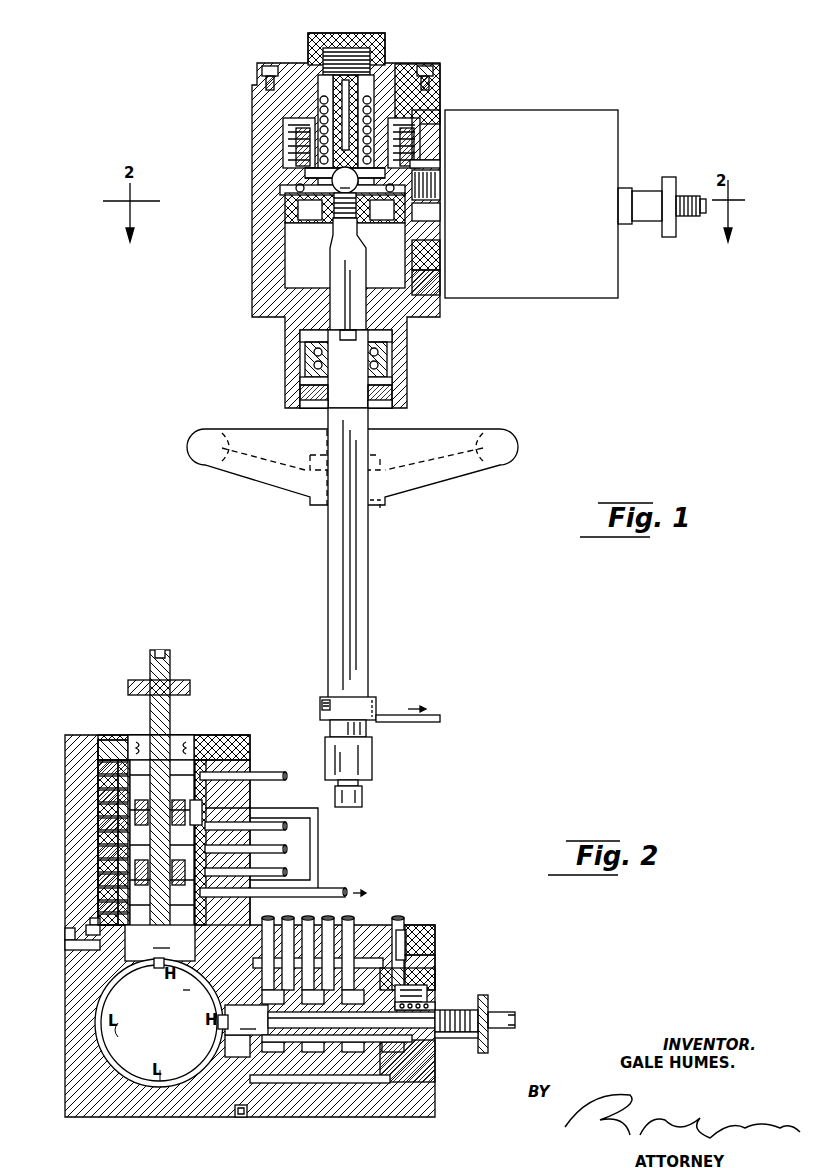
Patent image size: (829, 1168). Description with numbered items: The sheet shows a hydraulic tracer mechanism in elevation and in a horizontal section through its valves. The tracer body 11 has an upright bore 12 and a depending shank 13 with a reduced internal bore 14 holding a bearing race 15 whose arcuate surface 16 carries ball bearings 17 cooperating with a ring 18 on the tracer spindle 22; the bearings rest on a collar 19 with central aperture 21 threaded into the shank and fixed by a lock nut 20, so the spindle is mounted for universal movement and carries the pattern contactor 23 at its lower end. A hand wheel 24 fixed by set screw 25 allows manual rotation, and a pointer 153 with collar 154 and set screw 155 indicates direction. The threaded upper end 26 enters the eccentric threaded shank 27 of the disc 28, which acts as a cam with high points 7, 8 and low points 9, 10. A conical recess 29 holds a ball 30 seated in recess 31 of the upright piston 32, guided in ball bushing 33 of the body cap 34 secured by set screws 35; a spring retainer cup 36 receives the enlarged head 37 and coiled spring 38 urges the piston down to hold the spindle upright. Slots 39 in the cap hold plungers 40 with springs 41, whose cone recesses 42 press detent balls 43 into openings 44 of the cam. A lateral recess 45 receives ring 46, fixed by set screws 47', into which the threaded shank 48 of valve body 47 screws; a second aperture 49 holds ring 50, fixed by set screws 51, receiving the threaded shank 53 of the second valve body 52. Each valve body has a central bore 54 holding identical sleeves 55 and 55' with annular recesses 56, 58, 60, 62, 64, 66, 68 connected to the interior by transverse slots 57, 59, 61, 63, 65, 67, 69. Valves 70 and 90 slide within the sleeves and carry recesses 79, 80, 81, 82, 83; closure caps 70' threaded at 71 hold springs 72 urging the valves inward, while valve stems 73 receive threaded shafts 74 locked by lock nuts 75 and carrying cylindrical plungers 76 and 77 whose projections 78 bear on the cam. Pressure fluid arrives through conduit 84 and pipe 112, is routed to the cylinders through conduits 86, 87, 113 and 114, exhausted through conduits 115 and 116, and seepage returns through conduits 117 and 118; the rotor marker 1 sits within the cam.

In FIG. 1, the tracer body 11 is at (256, 195).
In FIG. 1, the upright bore 12 is at (288, 260).
In FIG. 1, the depending shank 13 is at (295, 335).
In FIG. 1, the internal bore 14 is at (305, 348).
In FIG. 1, the bearing race 15 is at (392, 352).
In FIG. 1, the arcuate surface 16 is at (392, 364).
In FIG. 1, the ball bearings 17 is at (392, 380).
In FIG. 1, the ring 18 is at (332, 355).
In FIG. 1, the collar 19 is at (300, 390).
In FIG. 1, the lock nut 20 is at (305, 405).
In FIG. 1, the central aperture 21 is at (372, 398).
In FIG. 1, the tracer spindle 22 is at (360, 572).
In FIG. 1, the template or pattern contactor 23 is at (362, 796).
In FIG. 1, the hand wheel 24 is at (518, 447).
In FIG. 1, the set screw 25 is at (380, 508).
In FIG. 1, the threaded upper end 26 is at (358, 215).
In FIG. 1, the threaded shank 27 is at (334, 222).
In FIG. 1, the disc 28 is at (292, 205).
In FIG. 2, the disc 28 is at (125, 1043).
In FIG. 1, the conical recess 29 is at (330, 205).
In FIG. 1, the ball 30 is at (345, 180).
In FIG. 1, the conical recess 31 is at (320, 170).
In FIG. 1, the upright piston 32 is at (358, 80).
In FIG. 1, the ball bushing 33 is at (318, 112).
In FIG. 1, the body cap 34 is at (400, 68).
In FIG. 1, the set screws 35 is at (435, 68).
In FIG. 1, the spring retainer cup 36 is at (308, 48).
In FIG. 1, the enlarged head 37 is at (285, 95).
In FIG. 1, the coiled spring 38 is at (335, 48).
In FIG. 1, the slots 39 is at (290, 135).
In FIG. 1, the plungers 40 is at (290, 160).
In FIG. 1, the coiled springs 41 is at (440, 140).
In FIG. 1, the cone shaped recess 42 is at (440, 166).
In FIG. 1, the detent balls 43 is at (282, 190).
In FIG. 1, the cone shaped openings 44 is at (440, 185).
In FIG. 1, the lateral recess 45 is at (440, 286).
In FIG. 1, the ring 46 is at (440, 268).
In FIG. 1, the valve body 47 is at (531, 224).
In FIG. 2, the valve body 47 is at (436, 920).
In FIG. 1, the threaded shank 48 is at (440, 248).
In FIG. 2, the circular aperture 49 is at (86, 930).
In FIG. 2, the ring 50 is at (90, 945).
In FIG. 2, the set screws 51 is at (65, 934).
In FIG. 2, the second valve body 52 is at (232, 745).
In FIG. 2, the threaded shank 53 is at (250, 926).
In FIG. 2, the central bore 54 is at (214, 740).
In FIG. 2, the cylindrical sleeve 55 is at (143, 731).
In FIG. 2, the annular recess 56 is at (100, 762).
In FIG. 2, the transverse slots 57 is at (100, 778).
In FIG. 2, the annular recess 58 is at (100, 795).
In FIG. 2, the transverse slots 59 is at (100, 810).
In FIG. 2, the annular recess 60 is at (100, 825).
In FIG. 2, the transverse slots 61 is at (100, 840).
In FIG. 2, the annular recess 62 is at (100, 855).
In FIG. 2, the transverse slots 63 is at (100, 866).
In FIG. 2, the annular recess 64 is at (100, 878).
In FIG. 2, the transverse slots 65 is at (100, 888).
In FIG. 2, the annular recess 66 is at (100, 898).
In FIG. 2, the transverse slots 67 is at (100, 908).
In FIG. 2, the annular recess 68 is at (100, 918).
In FIG. 2, the transverse slots 69 is at (90, 922).
In FIG. 2, the valve 70 is at (203, 827).
In FIG. 2, the threads 71 is at (428, 990).
In FIG. 2, the coiled springs 72 is at (435, 1002).
In FIG. 1, the valve stems 73 is at (647, 198).
In FIG. 2, the valve stems 73 is at (458, 1038).
In FIG. 1, the threaded shafts 74 is at (692, 205).
In FIG. 2, the threaded shafts 74 is at (500, 1014).
In FIG. 1, the lock nuts 75 is at (672, 182).
In FIG. 2, the lock nuts 75 is at (490, 1040).
In FIG. 2, the cylindrical plunger 76 is at (330, 1020).
In FIG. 2, the cylindrical plunger 77 is at (160, 805).
In FIG. 2, the projections 78 is at (225, 1040).
In FIG. 2, the annular recess 79 is at (410, 1052).
In FIG. 2, the annular recess 80 is at (200, 810).
In FIG. 2, the annular recess 81 is at (355, 1052).
In FIG. 2, the annular recess 82 is at (308, 918).
In FIG. 2, the annular recess 83 is at (275, 1052).
In FIG. 2, the conduit 84 is at (285, 848).
In FIG. 2, the conduit 86 is at (285, 825).
In FIG. 2, the conduit 87 is at (285, 870).
In FIG. 2, the valve 90 is at (432, 1082).
In FIG. 2, the conduit 112 is at (328, 918).
In FIG. 2, the conduit 113 is at (288, 918).
In FIG. 2, the cylinder conduit 114 is at (350, 918).
In FIG. 2, the exhaust conduit 115 is at (345, 892).
In FIG. 2, the exhaust conduit 116 is at (270, 914).
In FIG. 2, the conduit 117 is at (282, 775).
In FIG. 2, the conduit 118 is at (402, 930).
In FIG. 1, the pointer 153 is at (432, 722).
In FIG. 1, the collar 154 is at (376, 705).
In FIG. 1, the set screw 155 is at (322, 705).
In FIG. 2, the rotor 1 is at (191, 981).
In FIG. 2, the high point 7 is at (220, 1020).
In FIG. 2, the high point 8 is at (158, 962).
In FIG. 2, the low point 9 is at (110, 1030).
In FIG. 2, the low point 10 is at (162, 1075).
In FIG. 2, the set screws 47' is at (255, 1129).
In FIG. 2, the cylindrical sleeve 55' is at (445, 956).
In FIG. 2, the closure cap 70' is at (440, 968).